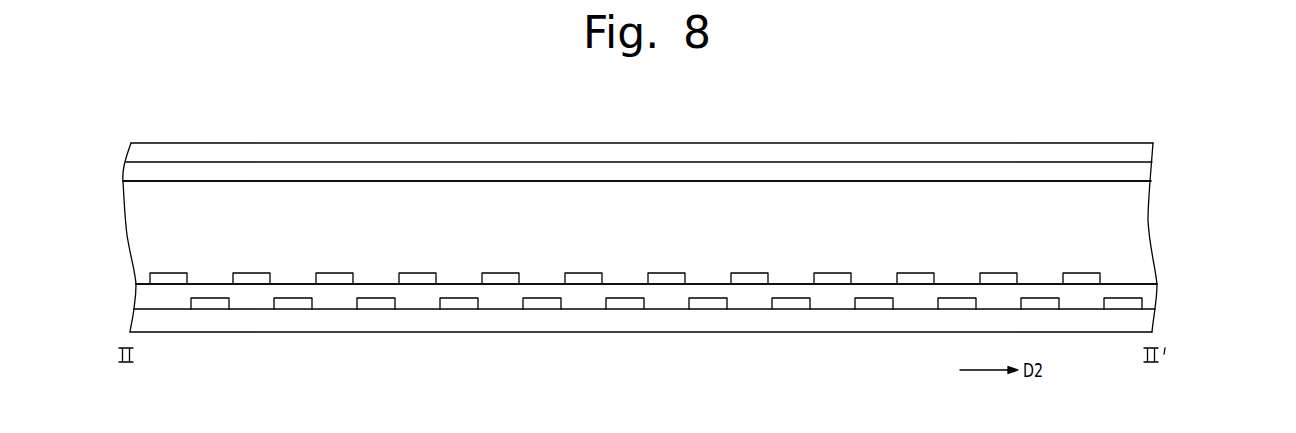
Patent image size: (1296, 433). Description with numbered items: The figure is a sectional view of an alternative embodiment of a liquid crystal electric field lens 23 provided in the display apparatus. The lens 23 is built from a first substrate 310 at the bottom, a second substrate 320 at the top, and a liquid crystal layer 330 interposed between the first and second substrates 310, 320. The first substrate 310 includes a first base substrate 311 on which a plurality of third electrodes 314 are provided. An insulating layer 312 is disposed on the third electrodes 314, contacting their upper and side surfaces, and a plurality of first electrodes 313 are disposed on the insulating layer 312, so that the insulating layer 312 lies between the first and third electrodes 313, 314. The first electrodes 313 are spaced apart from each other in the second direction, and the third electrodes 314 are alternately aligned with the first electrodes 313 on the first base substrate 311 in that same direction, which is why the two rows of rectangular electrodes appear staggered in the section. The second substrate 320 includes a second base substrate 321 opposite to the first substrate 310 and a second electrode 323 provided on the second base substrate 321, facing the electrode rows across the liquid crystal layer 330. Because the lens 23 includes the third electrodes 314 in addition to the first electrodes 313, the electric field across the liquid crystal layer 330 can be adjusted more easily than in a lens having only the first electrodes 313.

The liquid crystal electric field lens 23 is at (695, 206).
The first substrate 310 is at (698, 280).
The first base substrate 311 is at (1143, 322).
The insulating layer 312 is at (1143, 293).
The first electrode 313 is at (1085, 278).
The third electrode 314 is at (1047, 302).
The second substrate 320 is at (695, 164).
The second base substrate 321 is at (1140, 153).
The second electrode 323 is at (1140, 171).
The liquid crystal layer 330 is at (1137, 210).